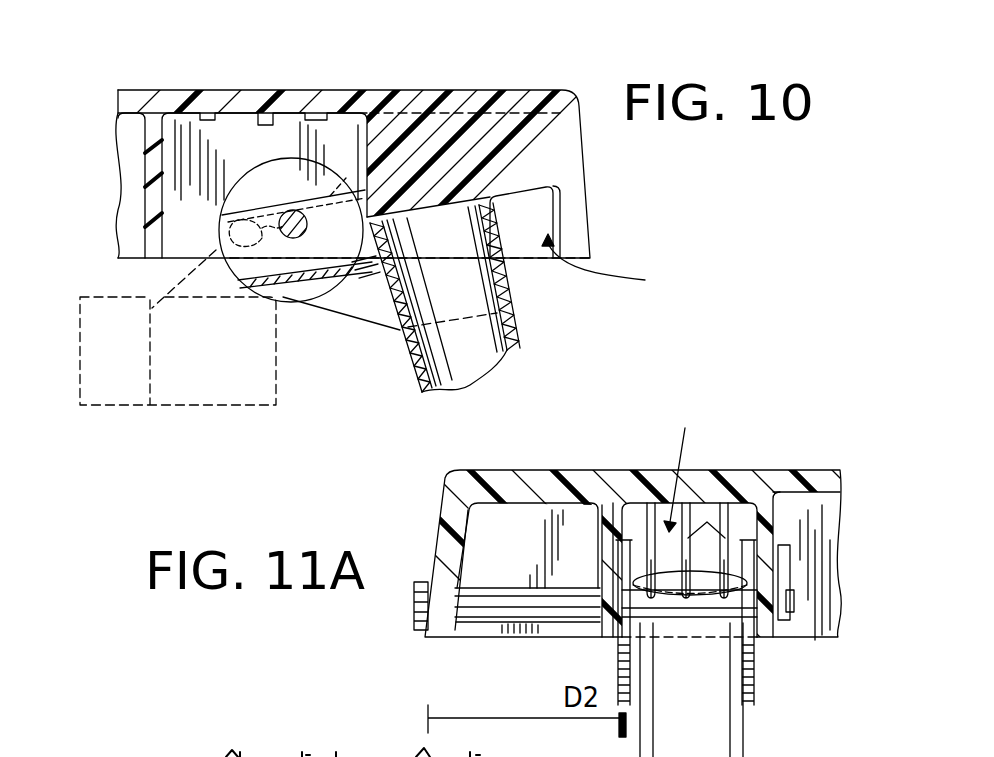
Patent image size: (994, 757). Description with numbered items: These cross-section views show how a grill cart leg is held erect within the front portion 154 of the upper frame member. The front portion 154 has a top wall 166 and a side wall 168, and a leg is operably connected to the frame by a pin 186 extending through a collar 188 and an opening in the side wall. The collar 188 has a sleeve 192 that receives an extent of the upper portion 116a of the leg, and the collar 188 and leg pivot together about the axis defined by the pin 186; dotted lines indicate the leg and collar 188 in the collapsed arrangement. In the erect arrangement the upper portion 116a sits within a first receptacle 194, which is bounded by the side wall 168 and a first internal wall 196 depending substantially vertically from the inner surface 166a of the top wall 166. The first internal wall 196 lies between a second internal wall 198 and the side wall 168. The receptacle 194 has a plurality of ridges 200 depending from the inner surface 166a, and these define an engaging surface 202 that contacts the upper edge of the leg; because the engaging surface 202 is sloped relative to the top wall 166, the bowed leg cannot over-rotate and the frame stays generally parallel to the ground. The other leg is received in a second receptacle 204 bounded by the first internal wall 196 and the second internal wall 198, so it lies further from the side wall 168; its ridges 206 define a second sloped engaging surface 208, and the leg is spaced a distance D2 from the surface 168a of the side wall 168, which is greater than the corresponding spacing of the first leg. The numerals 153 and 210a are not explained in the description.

In FIG. 10, the upper portion of the leg 116a is at (522, 335).
In FIG. 10, the body 153 is at (590, 150).
In FIG. 10, the front portion 154 is at (264, 84).
In FIG. 11A, the front portion 154 is at (502, 463).
In FIG. 10, the top wall 166 is at (173, 88).
In FIG. 11A, the top wall 166 is at (765, 468).
In FIG. 11A, the inner surface of the top wall 166a is at (807, 497).
In FIG. 11A, the side wall 168 is at (440, 502).
In FIG. 11A, the surface of the side wall 168a is at (443, 482).
In FIG. 10, the pin 186 is at (297, 211).
In FIG. 11A, the pin 186 is at (418, 606).
In FIG. 10, the collar 188 is at (345, 302).
In FIG. 10, the sleeve 192 is at (508, 288).
In FIG. 11A, the sleeve 192 is at (755, 687).
In FIG. 10, the first receptacle 194 is at (617, 265).
In FIG. 11A, the first internal wall 196 is at (618, 510).
In FIG. 11A, the second internal wall 198 is at (772, 542).
In FIG. 10, the ridges 200 is at (520, 175).
In FIG. 10, the engaging surface 202 is at (540, 190).
In FIG. 11A, the second receptacle 204 is at (692, 498).
In FIG. 11A, the ridges 206 is at (706, 520).
In FIG. 11A, the engaging surface 208 is at (722, 603).
In FIG. 11A, the tube 210a is at (720, 735).